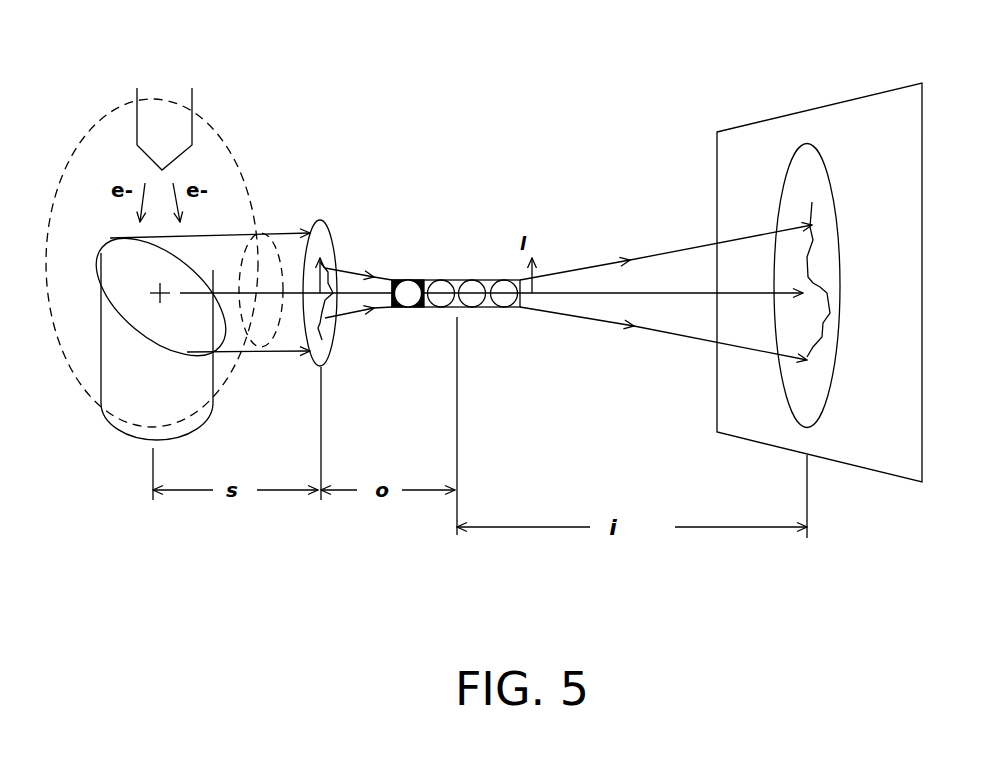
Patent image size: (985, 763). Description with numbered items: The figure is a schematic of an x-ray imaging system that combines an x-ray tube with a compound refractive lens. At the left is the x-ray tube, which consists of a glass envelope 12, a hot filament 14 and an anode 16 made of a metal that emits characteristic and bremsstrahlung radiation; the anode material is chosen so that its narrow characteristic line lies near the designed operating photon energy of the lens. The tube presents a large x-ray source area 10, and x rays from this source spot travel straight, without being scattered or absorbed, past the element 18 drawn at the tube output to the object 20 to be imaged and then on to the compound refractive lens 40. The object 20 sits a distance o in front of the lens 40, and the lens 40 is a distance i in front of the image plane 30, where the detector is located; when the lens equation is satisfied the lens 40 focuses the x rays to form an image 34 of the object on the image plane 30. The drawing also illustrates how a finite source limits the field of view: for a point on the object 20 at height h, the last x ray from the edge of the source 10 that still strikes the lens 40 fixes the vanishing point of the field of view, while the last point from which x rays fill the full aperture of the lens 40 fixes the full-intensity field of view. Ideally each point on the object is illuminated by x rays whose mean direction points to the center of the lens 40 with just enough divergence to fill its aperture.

The large-x-ray-source area 10 is at (267, 330).
The glass envelope 12 is at (232, 140).
The hot filament 14 is at (192, 127).
The anode 16 is at (128, 392).
The phosphor screen 18 is at (285, 230).
The object 20 is at (322, 230).
The image plane 30 is at (862, 160).
The image 34 is at (798, 173).
The compound refractive lens 40 is at (420, 270).